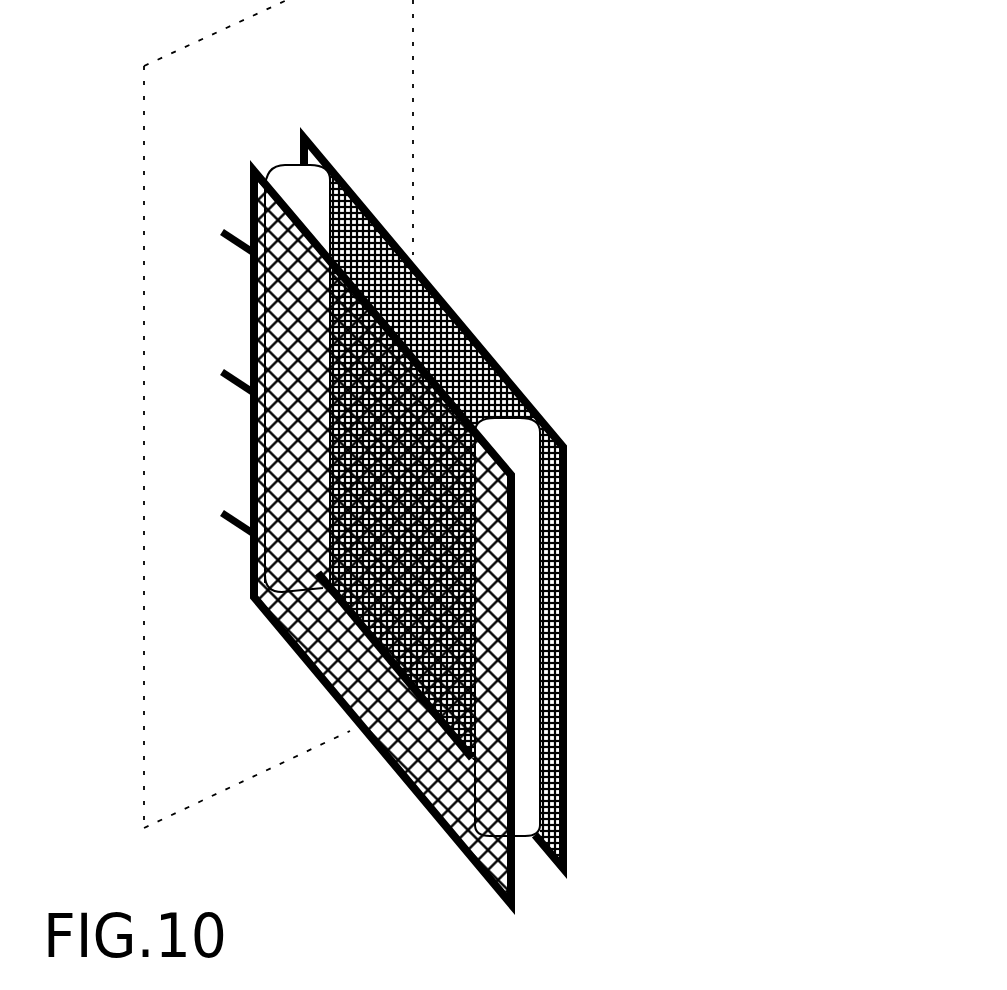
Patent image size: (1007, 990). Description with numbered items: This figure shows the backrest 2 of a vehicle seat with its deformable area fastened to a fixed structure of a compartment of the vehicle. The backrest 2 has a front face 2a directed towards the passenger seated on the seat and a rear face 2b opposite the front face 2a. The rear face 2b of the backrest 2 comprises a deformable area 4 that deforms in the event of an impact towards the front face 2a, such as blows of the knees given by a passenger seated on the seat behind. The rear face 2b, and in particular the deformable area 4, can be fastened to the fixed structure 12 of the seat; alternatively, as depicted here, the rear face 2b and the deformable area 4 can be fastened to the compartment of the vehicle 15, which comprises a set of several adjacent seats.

The backrest 2 is at (479, 558).
The front face 2a is at (567, 510).
The rear face 2b is at (515, 877).
The deformable area 4 is at (447, 773).
The fixed structure 12 is at (511, 431).
The compartment of the vehicle 15 is at (278, 414).